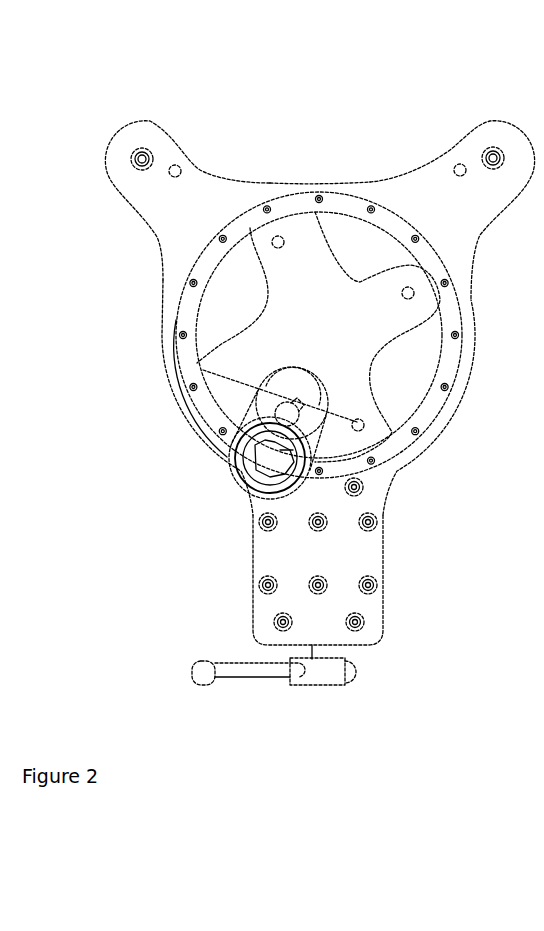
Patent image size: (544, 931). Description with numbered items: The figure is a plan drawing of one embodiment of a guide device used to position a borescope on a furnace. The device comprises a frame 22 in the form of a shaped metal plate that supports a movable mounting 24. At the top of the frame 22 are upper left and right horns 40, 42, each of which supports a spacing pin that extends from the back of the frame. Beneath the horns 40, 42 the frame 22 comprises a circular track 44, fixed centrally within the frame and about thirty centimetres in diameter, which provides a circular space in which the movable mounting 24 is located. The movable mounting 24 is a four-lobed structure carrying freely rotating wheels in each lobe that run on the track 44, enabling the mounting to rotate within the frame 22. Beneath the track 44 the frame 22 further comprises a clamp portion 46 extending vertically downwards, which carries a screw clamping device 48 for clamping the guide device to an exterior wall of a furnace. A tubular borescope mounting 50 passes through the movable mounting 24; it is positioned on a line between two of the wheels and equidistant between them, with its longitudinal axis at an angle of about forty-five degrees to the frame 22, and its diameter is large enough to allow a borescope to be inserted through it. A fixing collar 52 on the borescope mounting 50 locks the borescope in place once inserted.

The frame 22 is at (323, 180).
The movable mounting 24 is at (398, 315).
The horn 40 is at (128, 132).
The horn 42 is at (497, 128).
The circular track 44 is at (190, 305).
The clamp portion 46 is at (360, 560).
The screw clamping device 48 is at (357, 675).
The borescope mounting 50 is at (292, 378).
The fixing collar 52 is at (238, 460).